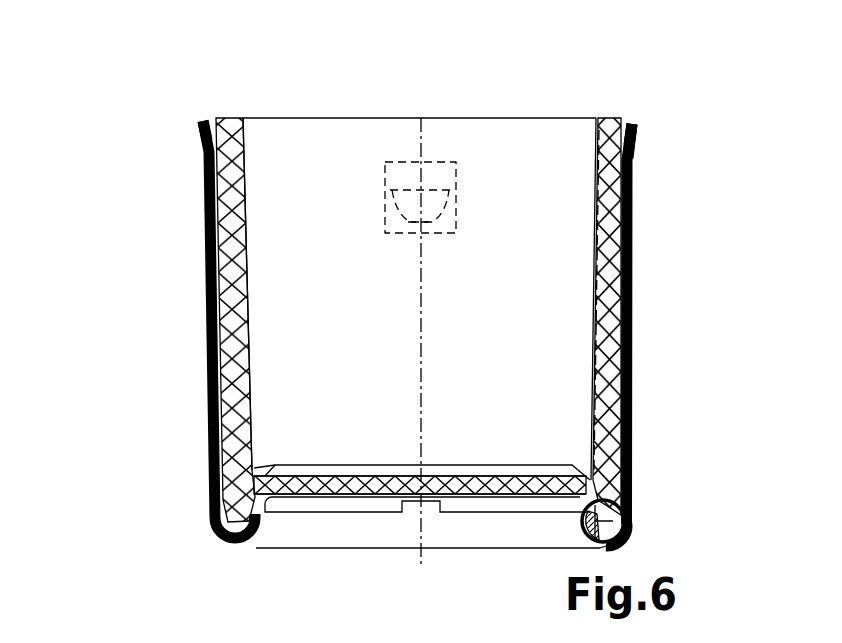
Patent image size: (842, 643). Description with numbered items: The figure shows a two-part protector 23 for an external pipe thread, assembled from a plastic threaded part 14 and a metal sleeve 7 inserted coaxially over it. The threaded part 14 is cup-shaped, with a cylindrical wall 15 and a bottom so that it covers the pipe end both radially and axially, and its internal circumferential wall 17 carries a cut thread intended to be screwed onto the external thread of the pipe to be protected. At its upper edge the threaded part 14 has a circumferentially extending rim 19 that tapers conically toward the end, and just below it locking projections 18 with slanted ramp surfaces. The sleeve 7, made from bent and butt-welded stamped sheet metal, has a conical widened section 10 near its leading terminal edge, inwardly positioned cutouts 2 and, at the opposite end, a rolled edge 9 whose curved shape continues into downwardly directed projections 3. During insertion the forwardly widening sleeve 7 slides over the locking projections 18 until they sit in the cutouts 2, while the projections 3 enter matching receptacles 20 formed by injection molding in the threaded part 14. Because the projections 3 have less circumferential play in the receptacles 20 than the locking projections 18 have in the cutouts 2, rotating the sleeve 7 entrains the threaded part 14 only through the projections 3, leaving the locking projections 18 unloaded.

The cutouts 2 is at (450, 222).
The projections 3 is at (618, 516).
The sleeve 7 is at (210, 330).
The rolled edge 9 is at (323, 549).
The conical widened section 10 is at (200, 136).
The threaded part 14 is at (504, 310).
The cylindrical wall 15 is at (623, 384).
The internal circumferential wall 17 is at (598, 300).
The locking projections 18 is at (430, 176).
The rim 19 is at (618, 140).
The receptacles 20 is at (586, 546).
The two-part protector 23 is at (185, 256).